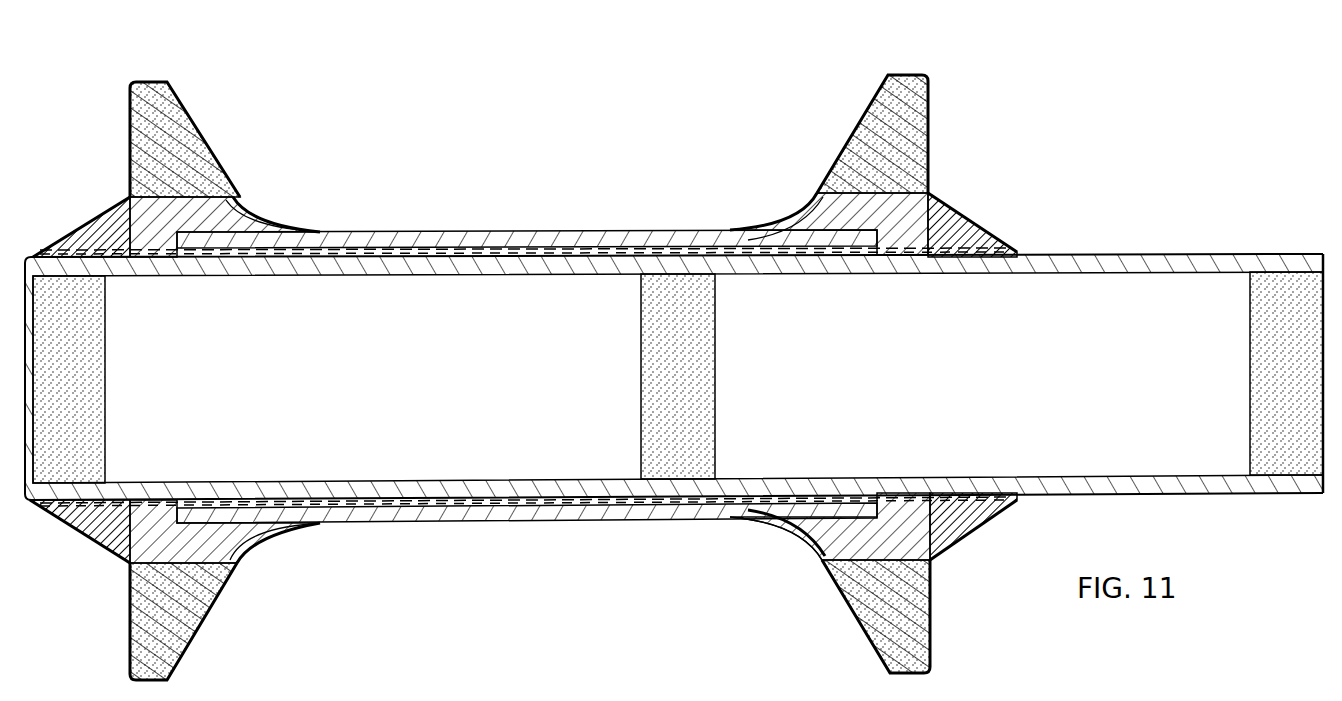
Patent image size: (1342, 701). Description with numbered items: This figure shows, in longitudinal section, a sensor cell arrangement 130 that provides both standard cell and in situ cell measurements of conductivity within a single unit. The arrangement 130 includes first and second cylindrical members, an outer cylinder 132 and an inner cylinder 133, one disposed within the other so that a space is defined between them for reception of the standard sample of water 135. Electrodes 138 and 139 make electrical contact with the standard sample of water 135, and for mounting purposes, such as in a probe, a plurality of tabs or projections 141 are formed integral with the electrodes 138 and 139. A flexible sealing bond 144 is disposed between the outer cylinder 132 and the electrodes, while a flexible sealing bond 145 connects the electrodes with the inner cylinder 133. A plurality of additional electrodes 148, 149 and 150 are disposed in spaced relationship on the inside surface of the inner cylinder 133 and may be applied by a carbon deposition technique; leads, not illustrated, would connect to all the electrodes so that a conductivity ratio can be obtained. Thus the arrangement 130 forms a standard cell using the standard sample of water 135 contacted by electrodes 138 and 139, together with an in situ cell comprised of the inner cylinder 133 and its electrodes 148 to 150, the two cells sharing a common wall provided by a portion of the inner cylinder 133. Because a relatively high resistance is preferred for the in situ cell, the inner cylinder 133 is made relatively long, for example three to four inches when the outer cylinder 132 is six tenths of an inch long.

The arrangement 130 is at (502, 553).
The outer cylinder 132 is at (458, 242).
The inner cylinder 133 is at (500, 274).
The standard sample of water 135 is at (375, 251).
The electrode 138 is at (818, 194).
The electrode 139 is at (232, 204).
The tabs or projections 141 is at (167, 83).
The flexible sealing bond 144 is at (800, 223).
The flexible sealing bond 145 is at (107, 225).
The additional electrode 148 is at (1258, 312).
The additional electrode 149 is at (700, 331).
The additional electrode 150 is at (90, 333).